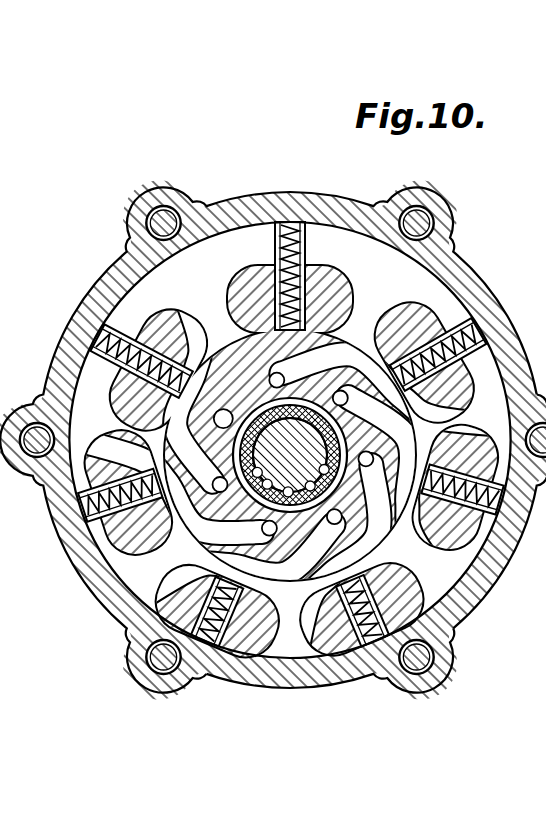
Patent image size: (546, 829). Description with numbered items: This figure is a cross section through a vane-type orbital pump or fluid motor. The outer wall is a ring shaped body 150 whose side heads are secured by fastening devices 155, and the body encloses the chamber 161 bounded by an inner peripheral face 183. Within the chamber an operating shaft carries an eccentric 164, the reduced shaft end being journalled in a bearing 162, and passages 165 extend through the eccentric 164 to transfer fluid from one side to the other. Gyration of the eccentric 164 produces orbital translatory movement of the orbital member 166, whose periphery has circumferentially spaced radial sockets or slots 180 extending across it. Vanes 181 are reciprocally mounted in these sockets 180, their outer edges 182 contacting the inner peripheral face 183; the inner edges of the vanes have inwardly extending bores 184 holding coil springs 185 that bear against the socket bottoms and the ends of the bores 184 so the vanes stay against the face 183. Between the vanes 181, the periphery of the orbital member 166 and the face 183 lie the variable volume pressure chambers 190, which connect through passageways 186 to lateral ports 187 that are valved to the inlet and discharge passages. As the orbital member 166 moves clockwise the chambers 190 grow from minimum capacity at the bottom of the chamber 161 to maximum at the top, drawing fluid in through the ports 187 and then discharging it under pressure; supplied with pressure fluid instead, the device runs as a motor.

The ring shaped body 150 is at (282, 193).
The fastening devices 155 is at (37, 420).
The chamber 161 is at (120, 293).
The bearing 162 is at (440, 420).
The eccentric 164 is at (240, 440).
The passages 165 is at (190, 427).
The orbital member 166 is at (117, 540).
The radial sockets or slots 180 is at (218, 664).
The vanes 181 is at (87, 495).
The outer edges 182 is at (117, 540).
The inner peripheral face 183 is at (112, 269).
The bores 184 is at (313, 222).
The coil springs 185 is at (240, 196).
The passageways 186 is at (490, 583).
The lateral ports 187 is at (214, 415).
The variable volume pressure chambers 190 is at (420, 277).